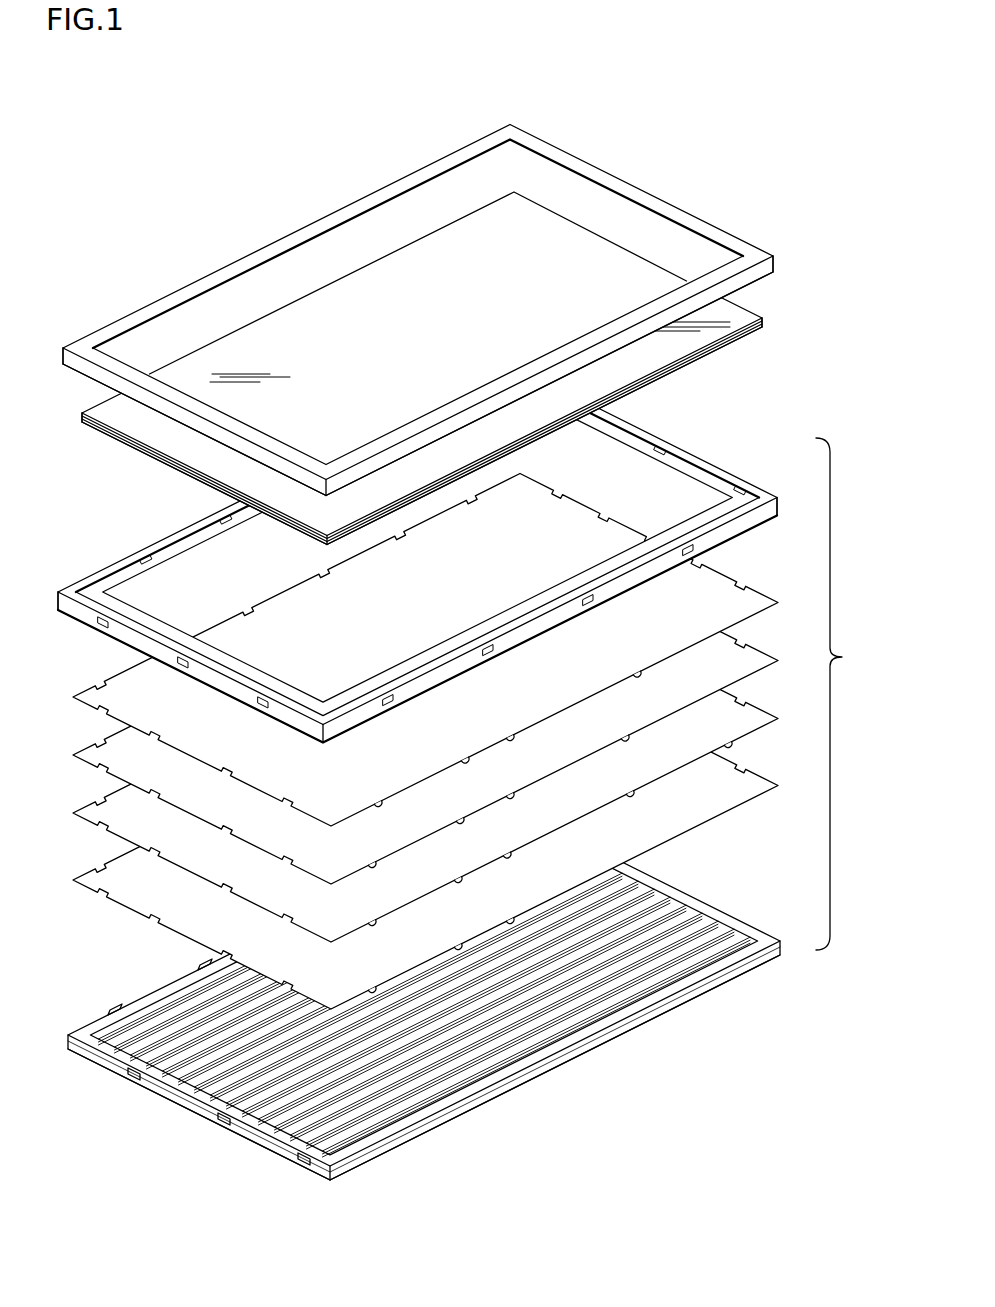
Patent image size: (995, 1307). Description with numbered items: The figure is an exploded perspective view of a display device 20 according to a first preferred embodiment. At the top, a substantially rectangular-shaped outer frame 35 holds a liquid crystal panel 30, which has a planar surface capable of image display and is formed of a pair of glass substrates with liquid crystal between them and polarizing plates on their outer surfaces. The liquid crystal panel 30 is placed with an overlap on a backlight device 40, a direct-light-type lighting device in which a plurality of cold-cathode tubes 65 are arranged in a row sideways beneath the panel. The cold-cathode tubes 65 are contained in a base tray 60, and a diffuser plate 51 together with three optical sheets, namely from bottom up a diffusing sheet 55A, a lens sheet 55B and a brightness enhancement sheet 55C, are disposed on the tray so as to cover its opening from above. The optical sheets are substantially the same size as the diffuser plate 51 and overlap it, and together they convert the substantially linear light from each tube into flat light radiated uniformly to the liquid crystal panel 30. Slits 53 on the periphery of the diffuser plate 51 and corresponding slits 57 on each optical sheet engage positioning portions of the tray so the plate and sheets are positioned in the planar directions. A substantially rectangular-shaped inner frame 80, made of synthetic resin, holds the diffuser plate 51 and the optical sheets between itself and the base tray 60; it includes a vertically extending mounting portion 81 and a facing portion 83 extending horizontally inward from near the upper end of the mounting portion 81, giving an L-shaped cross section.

The display device 20 is at (165, 178).
The outer frame 35 is at (606, 171).
The liquid crystal panel 30 is at (672, 350).
The backlight device 40 is at (843, 694).
The inner frame 80 is at (436, 554).
The mounting portion 81 is at (95, 625).
The facing portion 83 is at (155, 643).
The brightness enhancement sheet 55C is at (753, 592).
The lens sheet 55B is at (757, 650).
The diffusing sheet 55A is at (757, 706).
The slits 57 is at (637, 675).
The slits 53 is at (633, 857).
The diffuser plate 51 is at (113, 887).
The base tray 60 is at (439, 996).
The cold-cathode tubes 65 is at (312, 1046).